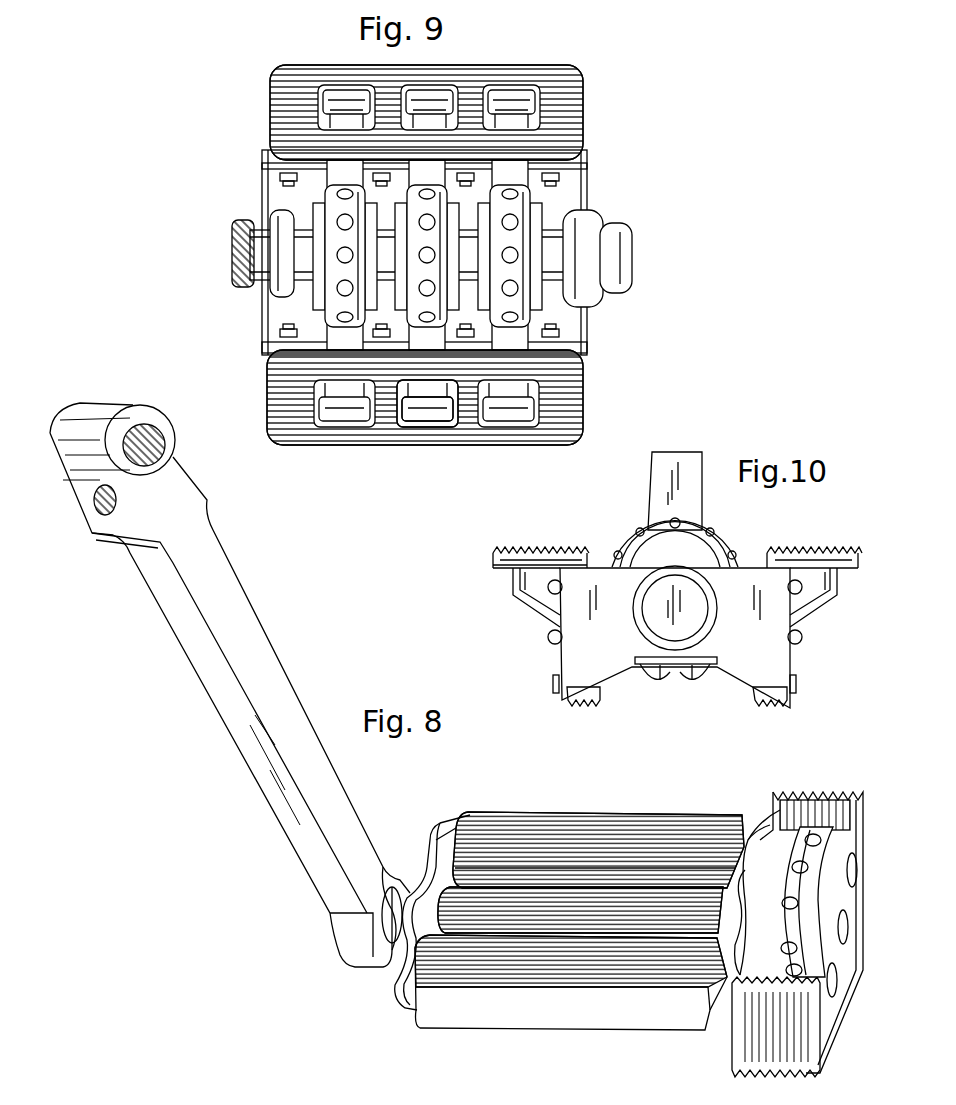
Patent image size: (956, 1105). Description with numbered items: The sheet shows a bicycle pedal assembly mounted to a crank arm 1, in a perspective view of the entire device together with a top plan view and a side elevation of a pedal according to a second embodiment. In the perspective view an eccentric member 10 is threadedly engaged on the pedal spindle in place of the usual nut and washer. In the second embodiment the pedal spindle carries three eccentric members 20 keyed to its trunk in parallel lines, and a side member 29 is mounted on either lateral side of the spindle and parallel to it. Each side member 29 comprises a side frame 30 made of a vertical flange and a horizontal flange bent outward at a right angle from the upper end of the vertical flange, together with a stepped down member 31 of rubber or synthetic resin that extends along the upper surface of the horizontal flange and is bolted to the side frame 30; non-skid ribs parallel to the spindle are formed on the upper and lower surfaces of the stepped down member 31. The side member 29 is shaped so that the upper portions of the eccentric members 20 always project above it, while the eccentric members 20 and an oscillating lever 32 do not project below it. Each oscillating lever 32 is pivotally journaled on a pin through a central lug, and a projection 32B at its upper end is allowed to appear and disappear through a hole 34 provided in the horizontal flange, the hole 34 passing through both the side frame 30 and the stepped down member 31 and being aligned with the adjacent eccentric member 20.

In FIG. 8, the crank arm 1 is at (300, 717).
In FIG. 8, the eccentric member 10 is at (830, 889).
In FIG. 8, the eccentric member 20 is at (847, 962).
In FIG. 10, the side member 29 is at (903, 542).
In FIG. 10, the side frame 30 is at (850, 575).
In FIG. 9, the stepped down member 31 is at (570, 404).
In FIG. 10, the stepped down member 31 is at (847, 549).
In FIG. 9, the oscillating lever 32 is at (405, 338).
In FIG. 10, the oscillating lever 32 is at (810, 617).
In FIG. 9, the projection 32B is at (415, 424).
In FIG. 9, the hole 34 is at (450, 392).